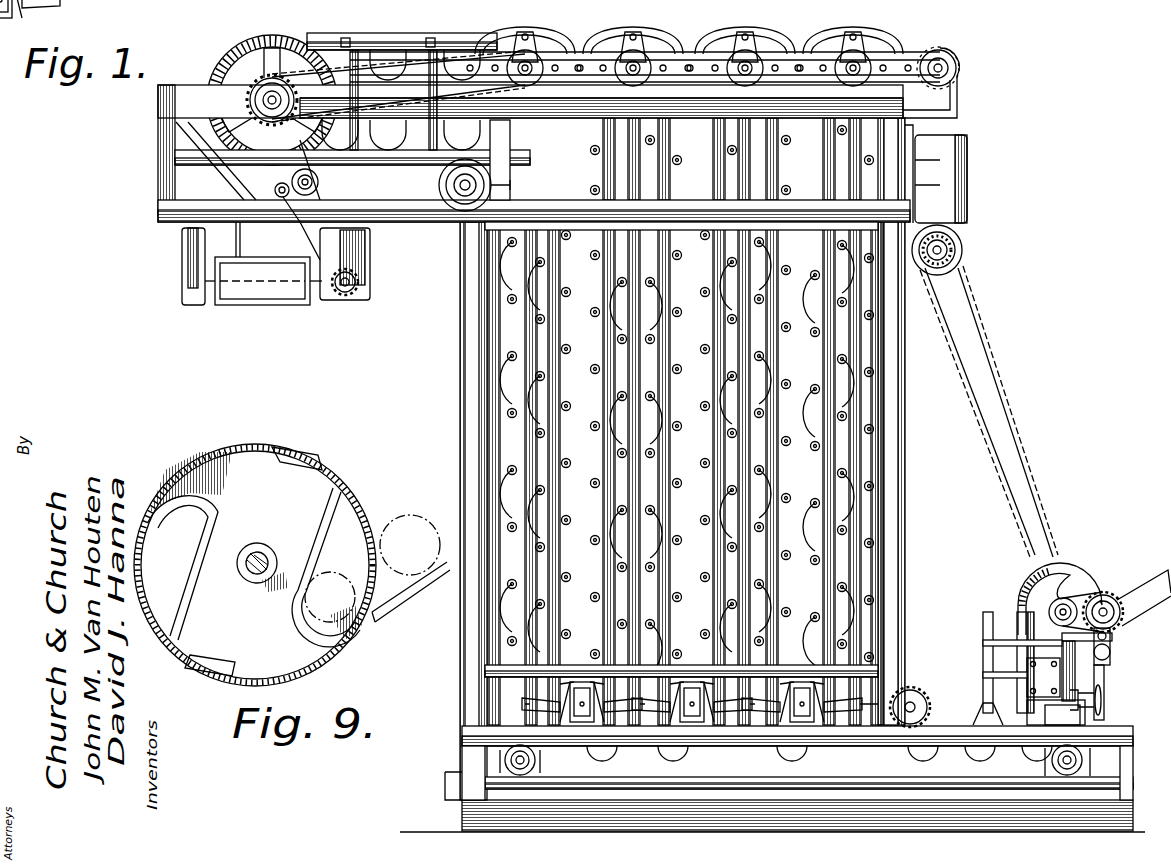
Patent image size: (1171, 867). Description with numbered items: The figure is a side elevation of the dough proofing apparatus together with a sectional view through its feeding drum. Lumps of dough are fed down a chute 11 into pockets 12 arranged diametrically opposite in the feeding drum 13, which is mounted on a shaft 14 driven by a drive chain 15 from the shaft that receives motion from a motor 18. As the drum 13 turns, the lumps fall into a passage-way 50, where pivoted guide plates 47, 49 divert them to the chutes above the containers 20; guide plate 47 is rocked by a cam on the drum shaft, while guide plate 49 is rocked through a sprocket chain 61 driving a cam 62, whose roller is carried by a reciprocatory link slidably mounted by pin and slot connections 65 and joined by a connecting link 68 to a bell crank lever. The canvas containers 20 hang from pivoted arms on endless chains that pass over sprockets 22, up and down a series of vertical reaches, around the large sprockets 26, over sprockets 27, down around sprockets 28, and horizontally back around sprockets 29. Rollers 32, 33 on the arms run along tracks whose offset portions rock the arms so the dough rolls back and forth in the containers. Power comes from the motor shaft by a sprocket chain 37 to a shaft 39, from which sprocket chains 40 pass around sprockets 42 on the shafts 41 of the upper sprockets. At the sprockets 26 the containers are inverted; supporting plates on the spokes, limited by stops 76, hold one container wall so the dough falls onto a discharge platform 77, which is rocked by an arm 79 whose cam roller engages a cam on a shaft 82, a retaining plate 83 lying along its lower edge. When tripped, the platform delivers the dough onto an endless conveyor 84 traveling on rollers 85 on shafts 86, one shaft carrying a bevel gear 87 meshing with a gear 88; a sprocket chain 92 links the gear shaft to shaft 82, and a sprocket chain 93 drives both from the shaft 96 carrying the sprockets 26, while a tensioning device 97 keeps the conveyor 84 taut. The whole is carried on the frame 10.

In FIG. 1, the main frame 10 is at (458, 410).
In FIG. 1, the chute 11 is at (1145, 608).
In FIG. 9, the chute 11 is at (416, 590).
In FIG. 9, the pockets 12 is at (160, 508).
In FIG. 1, the feeding drum 13 is at (1080, 572).
In FIG. 9, the feeding drum 13 is at (278, 450).
In FIG. 9, the shaft 14 is at (252, 578).
In FIG. 1, the drive chain 15 is at (1030, 478).
In FIG. 1, the motor 18 is at (968, 203).
In FIG. 1, the containers 20 is at (708, 645).
In FIG. 1, the sprockets 22 is at (930, 700).
In FIG. 1, the sprockets 26 is at (240, 58).
In FIG. 1, the sprockets 27 is at (512, 48).
In FIG. 1, the sprockets 28 is at (540, 762).
In FIG. 1, the sprockets 29 is at (1050, 762).
In FIG. 1, the rollers 32 is at (815, 172).
In FIG. 1, the rollers 33 is at (838, 192).
In FIG. 1, the sprocket chain 37 is at (958, 108).
In FIG. 1, the shaft 39 is at (957, 70).
In FIG. 1, the sprocket chains 40 is at (938, 50).
In FIG. 1, the shafts 41 is at (640, 66).
In FIG. 1, the sprockets 42 is at (600, 85).
In FIG. 1, the guide plate 47 is at (992, 646).
In FIG. 1, the guide plate 49 is at (992, 678).
In FIG. 1, the passage-way 50 is at (1000, 618).
In FIG. 1, the sprocket chain 61 is at (1073, 602).
In FIG. 1, the cam 62 is at (1115, 598).
In FIG. 1, the pin and slot connections 65 is at (1110, 643).
In FIG. 1, the connecting link 68 is at (1106, 690).
In FIG. 1, the stops 76 is at (955, 268).
In FIG. 1, the discharge platform 77 is at (948, 250).
In FIG. 1, the arm 79 is at (978, 716).
In FIG. 1, the shaft 82 is at (318, 182).
In FIG. 1, the retaining plate 83 is at (216, 161).
In FIG. 1, the endless conveyor 84 is at (268, 306).
In FIG. 1, the rollers 85 is at (200, 308).
In FIG. 1, the shafts 86 is at (322, 300).
In FIG. 1, the bevel gear 87 is at (278, 222).
In FIG. 1, the gear 88 is at (340, 297).
In FIG. 1, the sprocket chain 92 is at (306, 230).
In FIG. 1, the sprocket chain 93 is at (276, 188).
In FIG. 1, the shaft 96 is at (264, 101).
In FIG. 1, the tensioning device 97 is at (263, 281).